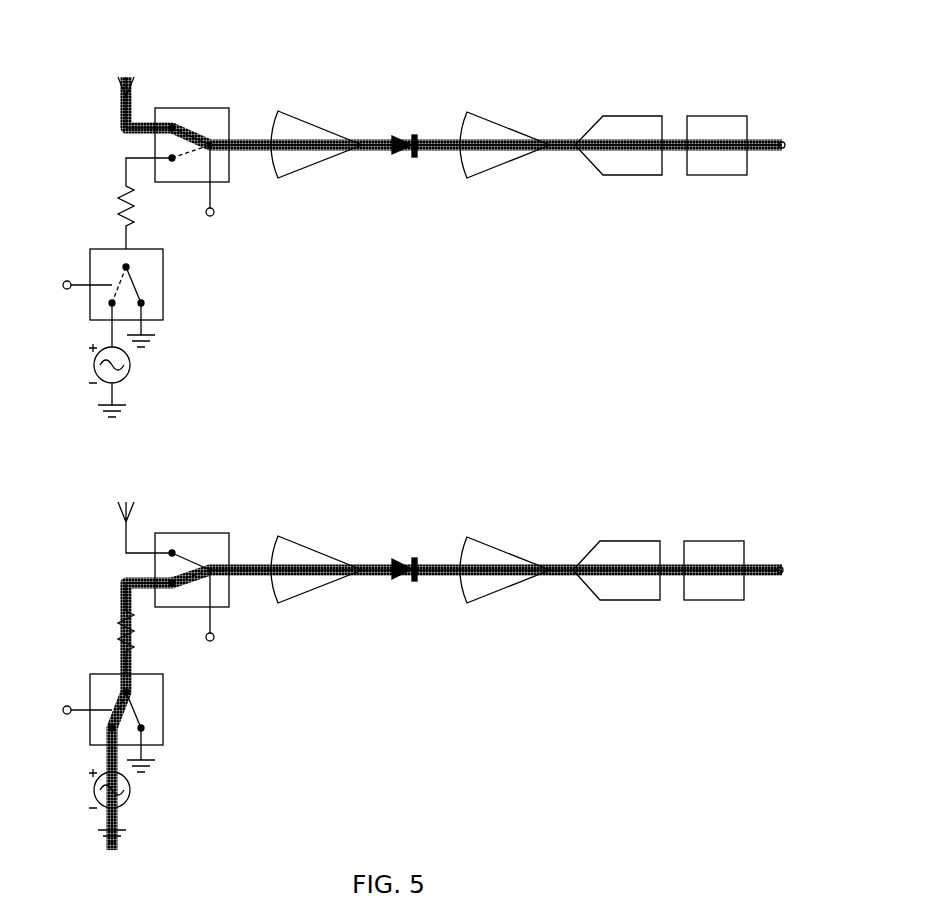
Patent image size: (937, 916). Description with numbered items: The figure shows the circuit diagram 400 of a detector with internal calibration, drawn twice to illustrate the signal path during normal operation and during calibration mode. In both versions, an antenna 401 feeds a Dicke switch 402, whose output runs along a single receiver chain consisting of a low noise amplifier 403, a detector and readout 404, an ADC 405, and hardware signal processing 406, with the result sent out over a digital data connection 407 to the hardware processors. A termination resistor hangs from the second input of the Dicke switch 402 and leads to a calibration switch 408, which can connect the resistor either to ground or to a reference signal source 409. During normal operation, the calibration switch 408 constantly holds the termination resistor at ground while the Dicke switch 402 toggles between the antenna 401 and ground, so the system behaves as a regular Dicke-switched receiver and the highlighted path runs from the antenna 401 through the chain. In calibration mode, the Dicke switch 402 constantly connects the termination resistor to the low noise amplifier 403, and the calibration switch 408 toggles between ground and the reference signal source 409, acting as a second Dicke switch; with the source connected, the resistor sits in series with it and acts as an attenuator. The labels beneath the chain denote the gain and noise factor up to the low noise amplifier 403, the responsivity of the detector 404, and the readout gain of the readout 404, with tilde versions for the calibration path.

The circuit diagram 400 is at (362, 255).
The antenna 401 is at (110, 79).
The Dicke switch 402 is at (228, 107).
The low noise amplifier (LNA) 403 is at (308, 115).
The detector and readout 404 is at (422, 127).
The ADC 405 is at (658, 112).
The hardware signal processing 406 is at (735, 110).
The digital data connection 407 is at (791, 158).
The calibration switch 408 is at (172, 303).
The reference signal source 409 is at (88, 365).